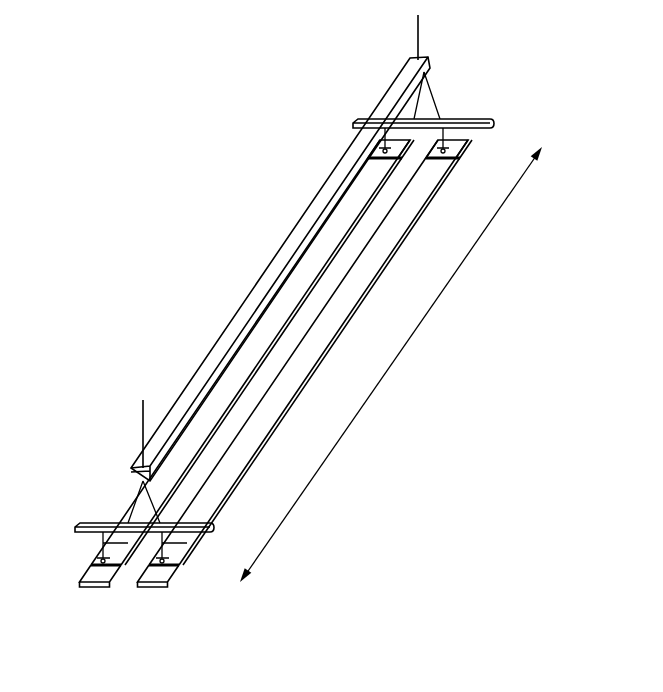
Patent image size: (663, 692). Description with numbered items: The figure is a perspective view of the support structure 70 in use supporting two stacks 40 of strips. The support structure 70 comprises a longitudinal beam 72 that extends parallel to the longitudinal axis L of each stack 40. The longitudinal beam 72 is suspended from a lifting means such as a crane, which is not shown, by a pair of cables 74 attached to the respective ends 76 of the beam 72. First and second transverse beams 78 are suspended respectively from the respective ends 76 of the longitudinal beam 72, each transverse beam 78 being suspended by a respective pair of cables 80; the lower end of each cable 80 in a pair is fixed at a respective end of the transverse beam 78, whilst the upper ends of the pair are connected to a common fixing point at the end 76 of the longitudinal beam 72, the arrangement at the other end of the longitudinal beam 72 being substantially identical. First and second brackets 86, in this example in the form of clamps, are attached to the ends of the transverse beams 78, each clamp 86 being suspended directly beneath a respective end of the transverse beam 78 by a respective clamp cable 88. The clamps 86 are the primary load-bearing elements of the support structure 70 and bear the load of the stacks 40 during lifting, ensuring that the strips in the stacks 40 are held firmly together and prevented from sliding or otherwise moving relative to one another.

The support structure 70 is at (192, 231).
The longitudinal beam 72 is at (332, 178).
The cables 74 is at (419, 39).
The ends of the longitudinal beam 76 is at (396, 60).
The transverse beams 78 is at (493, 124).
The cables 80 is at (429, 91).
The stack 40 is at (306, 272).
The brackets 86 is at (448, 150).
The clamp cable 88 is at (100, 549).
The longitudinal axis L is at (391, 364).